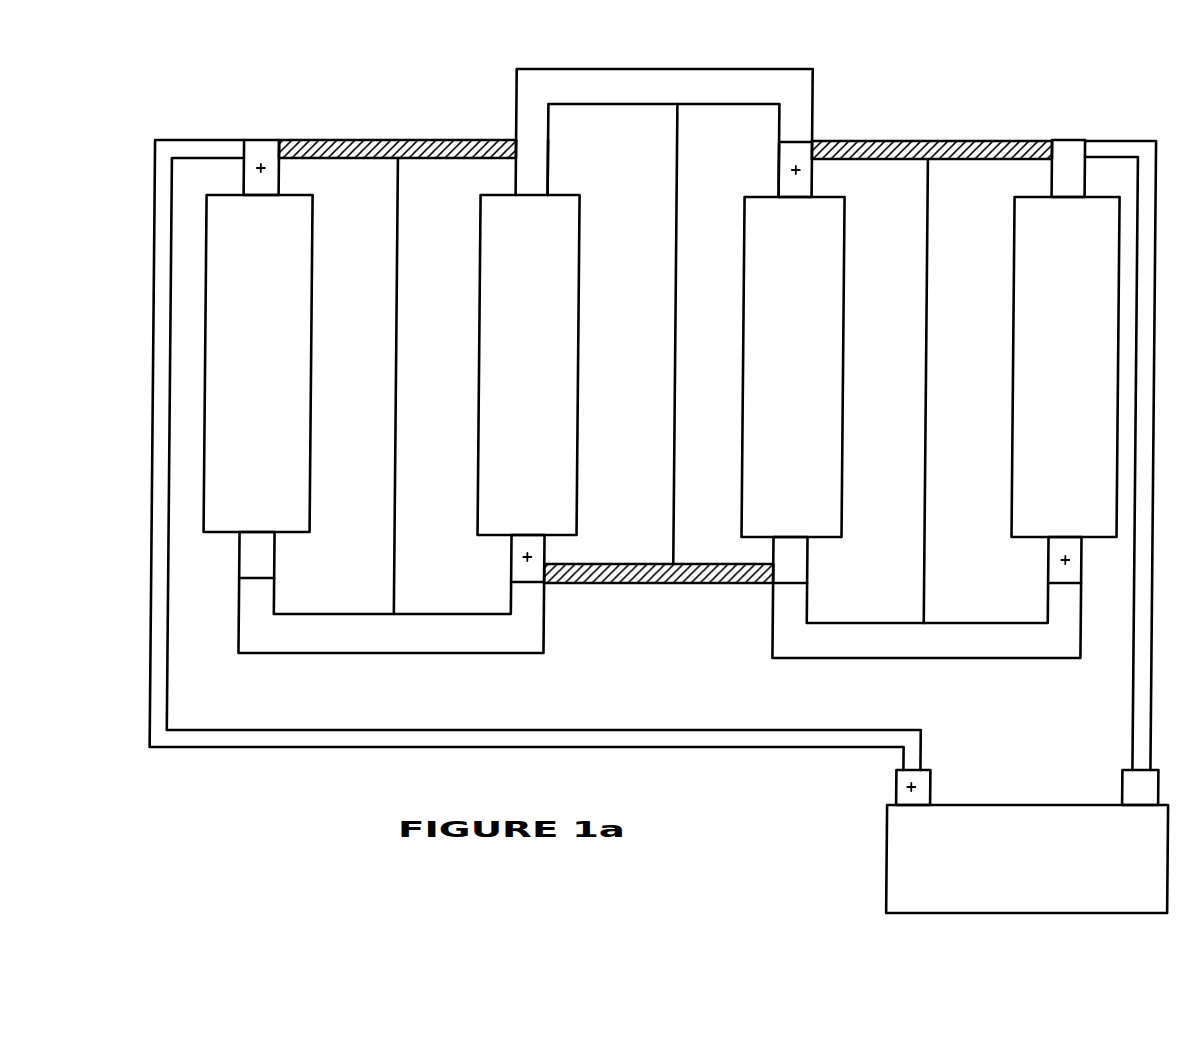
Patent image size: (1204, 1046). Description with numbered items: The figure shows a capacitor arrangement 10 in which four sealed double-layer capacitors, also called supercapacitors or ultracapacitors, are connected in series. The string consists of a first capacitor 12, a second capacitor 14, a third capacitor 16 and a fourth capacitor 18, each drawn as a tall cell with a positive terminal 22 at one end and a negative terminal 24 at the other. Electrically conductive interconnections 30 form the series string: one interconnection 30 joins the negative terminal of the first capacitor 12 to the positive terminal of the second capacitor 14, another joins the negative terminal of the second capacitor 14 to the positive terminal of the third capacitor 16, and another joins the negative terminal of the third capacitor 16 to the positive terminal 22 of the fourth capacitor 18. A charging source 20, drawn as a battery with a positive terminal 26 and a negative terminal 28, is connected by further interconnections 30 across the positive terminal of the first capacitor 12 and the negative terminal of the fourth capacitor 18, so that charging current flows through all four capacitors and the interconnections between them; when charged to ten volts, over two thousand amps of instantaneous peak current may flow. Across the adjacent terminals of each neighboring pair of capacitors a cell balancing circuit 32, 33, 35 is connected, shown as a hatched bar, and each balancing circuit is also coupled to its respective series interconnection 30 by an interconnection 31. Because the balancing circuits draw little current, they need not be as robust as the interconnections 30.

The capacitor bank system 10 is at (671, 458).
The first capacitor 12 is at (280, 304).
The second capacitor 14 is at (532, 290).
The third capacitor 16 is at (812, 308).
The fourth capacitor 18 is at (1073, 400).
The charging source 20 is at (929, 843).
The positive terminal 22 is at (260, 166).
The negative cell terminal 24 is at (530, 168).
The battery positive terminal 26 is at (922, 786).
The battery negative terminal 28 is at (1148, 790).
The electrically conductive interconnection 30 is at (668, 92).
The interconnection 31 is at (400, 338).
The cell balancing circuit 32 is at (373, 148).
The cell balancing circuit 33 is at (634, 586).
The cell balancing circuit 35 is at (928, 141).